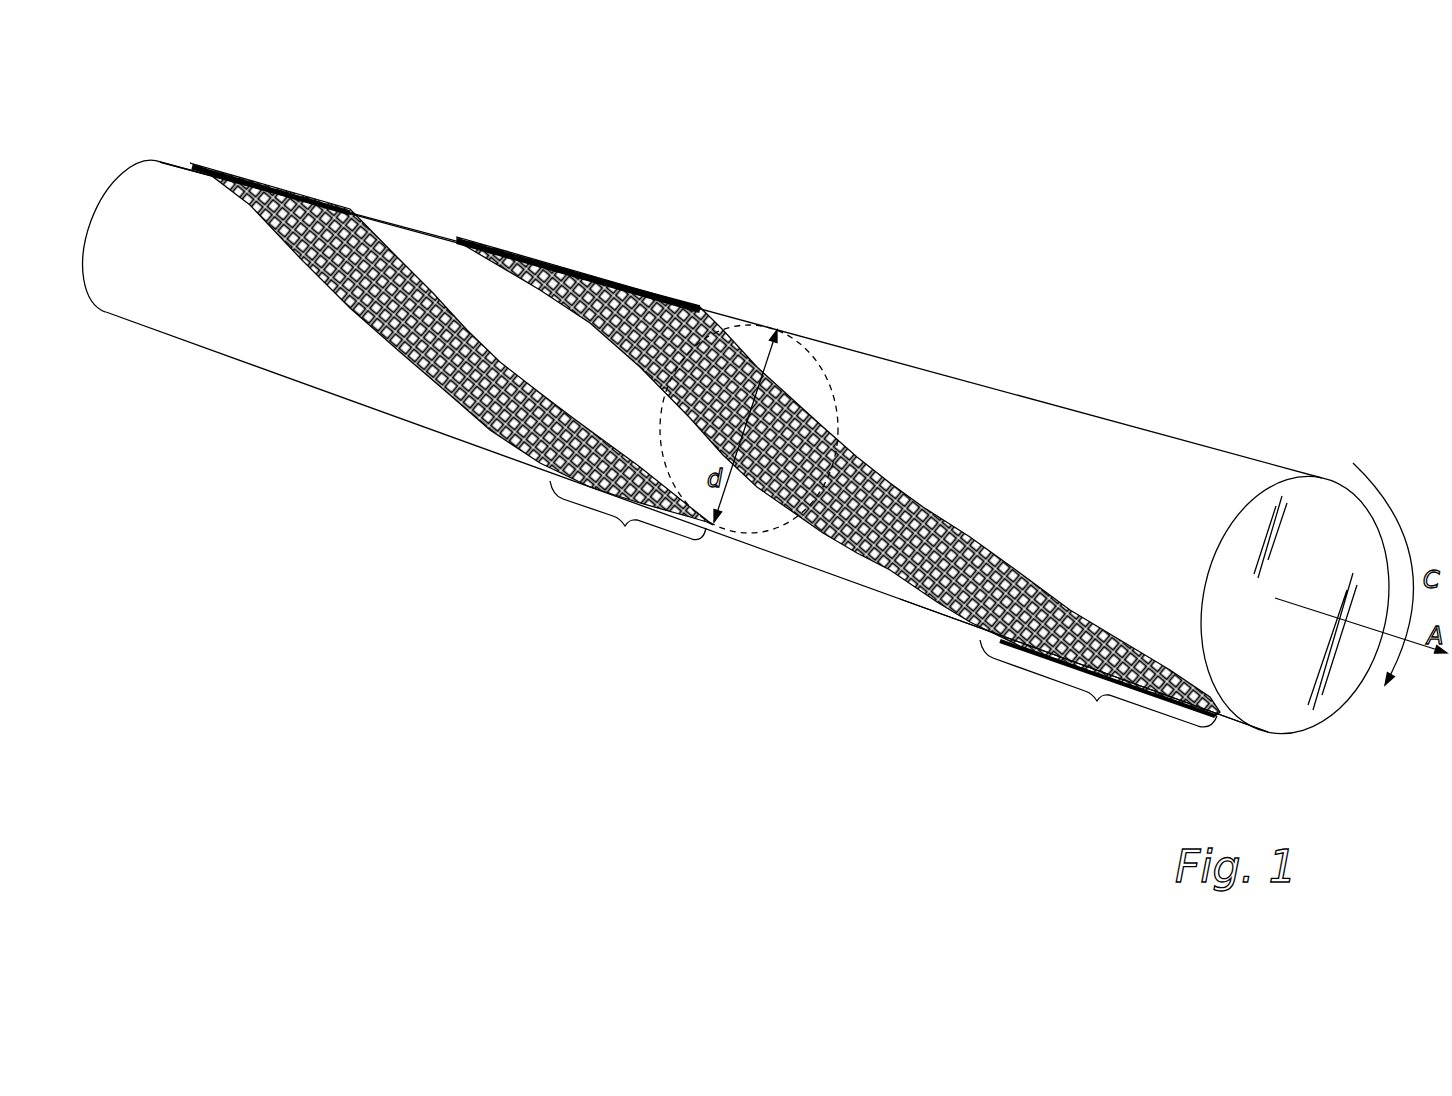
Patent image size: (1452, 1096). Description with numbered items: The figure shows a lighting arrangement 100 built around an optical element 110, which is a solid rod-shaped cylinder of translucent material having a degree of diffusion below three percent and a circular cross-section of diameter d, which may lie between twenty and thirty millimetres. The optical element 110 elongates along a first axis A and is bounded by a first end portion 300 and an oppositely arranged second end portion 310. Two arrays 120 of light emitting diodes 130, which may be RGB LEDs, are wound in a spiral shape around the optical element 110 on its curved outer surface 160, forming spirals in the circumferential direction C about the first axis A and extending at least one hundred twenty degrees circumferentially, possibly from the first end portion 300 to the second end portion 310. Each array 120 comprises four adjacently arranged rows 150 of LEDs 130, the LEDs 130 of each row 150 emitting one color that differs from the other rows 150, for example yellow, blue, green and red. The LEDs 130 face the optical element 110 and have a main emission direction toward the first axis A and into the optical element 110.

The lighting arrangement 100 is at (1208, 313).
The optical element 110 is at (407, 207).
The array of light emitting diodes 120 is at (705, 450).
The light emitting diodes 130 is at (710, 325).
The rows of LEDs 150 is at (1009, 640).
The outer surface 160 is at (1113, 462).
The first end portion 300 is at (97, 195).
The second end portion 310 is at (1345, 527).